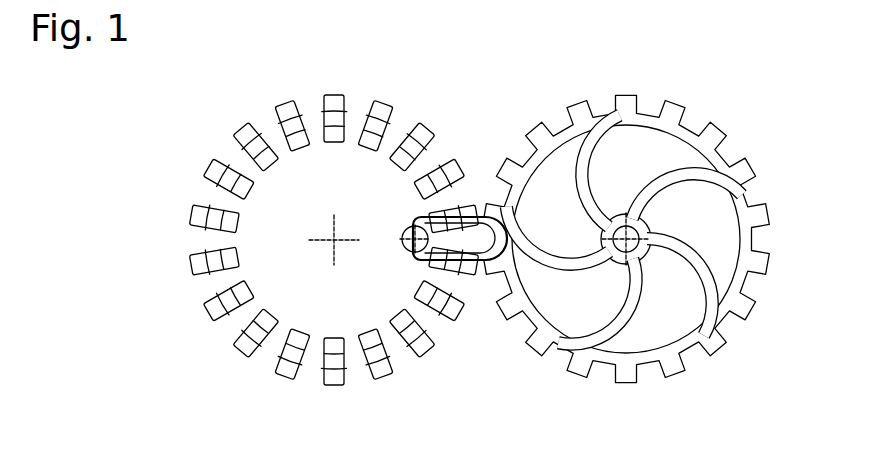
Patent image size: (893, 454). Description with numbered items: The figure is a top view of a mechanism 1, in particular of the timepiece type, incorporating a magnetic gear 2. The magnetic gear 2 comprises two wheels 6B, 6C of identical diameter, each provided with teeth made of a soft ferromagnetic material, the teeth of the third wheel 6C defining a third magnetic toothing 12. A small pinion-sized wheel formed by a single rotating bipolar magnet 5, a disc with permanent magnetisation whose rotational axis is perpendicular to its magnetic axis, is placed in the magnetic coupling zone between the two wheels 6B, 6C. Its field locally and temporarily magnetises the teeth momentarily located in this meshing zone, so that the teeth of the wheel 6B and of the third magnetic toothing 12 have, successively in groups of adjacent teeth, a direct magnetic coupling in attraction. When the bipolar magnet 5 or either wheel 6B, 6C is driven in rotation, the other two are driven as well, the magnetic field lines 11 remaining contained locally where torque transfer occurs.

The mechanism 1 is at (115, 174).
The magnetic gear 2 is at (172, 152).
The rotating bipolar magnet 5 is at (407, 229).
The wheel 6B is at (333, 203).
The third wheel 6C is at (654, 89).
The magnetic field lines 11 is at (522, 228).
The third magnetic toothing 12 is at (713, 128).